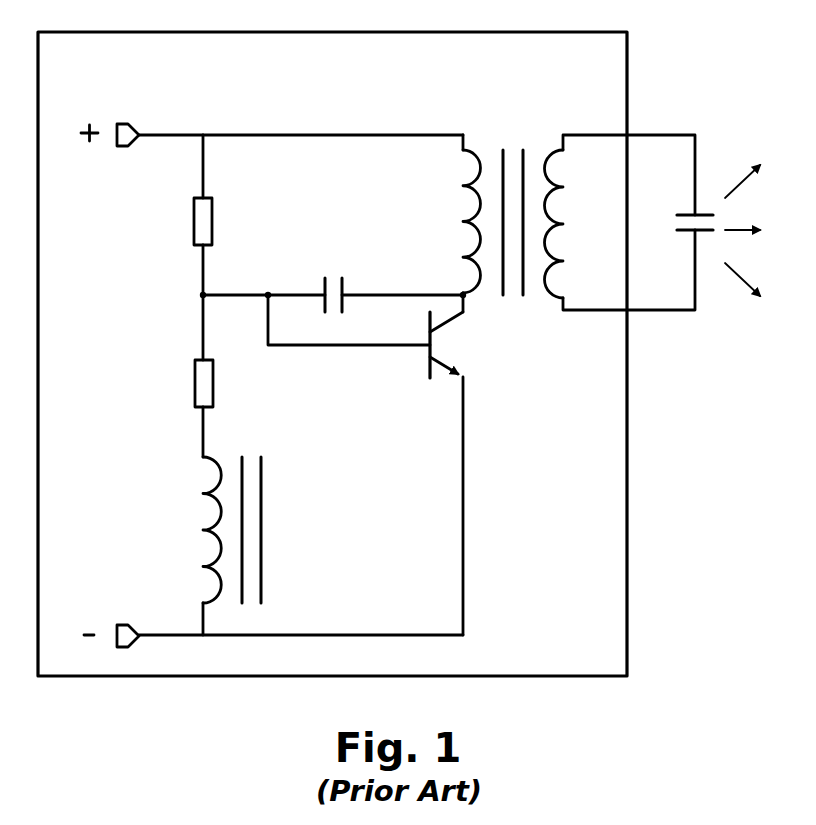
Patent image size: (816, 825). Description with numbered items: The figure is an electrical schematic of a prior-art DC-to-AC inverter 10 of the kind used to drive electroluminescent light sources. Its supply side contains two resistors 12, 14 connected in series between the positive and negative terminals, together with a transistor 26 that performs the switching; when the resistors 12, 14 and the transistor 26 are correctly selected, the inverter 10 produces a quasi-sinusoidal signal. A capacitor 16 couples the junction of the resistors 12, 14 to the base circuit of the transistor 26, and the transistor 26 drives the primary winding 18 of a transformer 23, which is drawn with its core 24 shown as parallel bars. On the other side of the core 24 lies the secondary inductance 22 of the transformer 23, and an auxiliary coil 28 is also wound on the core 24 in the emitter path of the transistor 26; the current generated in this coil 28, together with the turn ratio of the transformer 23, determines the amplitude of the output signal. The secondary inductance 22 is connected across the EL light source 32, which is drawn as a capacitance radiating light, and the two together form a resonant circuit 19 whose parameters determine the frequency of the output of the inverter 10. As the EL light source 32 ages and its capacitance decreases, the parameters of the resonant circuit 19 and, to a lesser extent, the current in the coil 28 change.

The DC-to-AC inverter 10 is at (128, 69).
The resistor 12 is at (194, 215).
The resistor 14 is at (195, 373).
The capacitor 16 is at (334, 269).
The primary winding 18 is at (482, 243).
The resonant circuit 19 is at (669, 133).
The secondary inductance 22 is at (545, 243).
The transformer 23 is at (513, 145).
The core 24 is at (513, 292).
The transistor 26 is at (428, 363).
The auxiliary coil 28 is at (222, 510).
The EL light source 32 is at (702, 235).